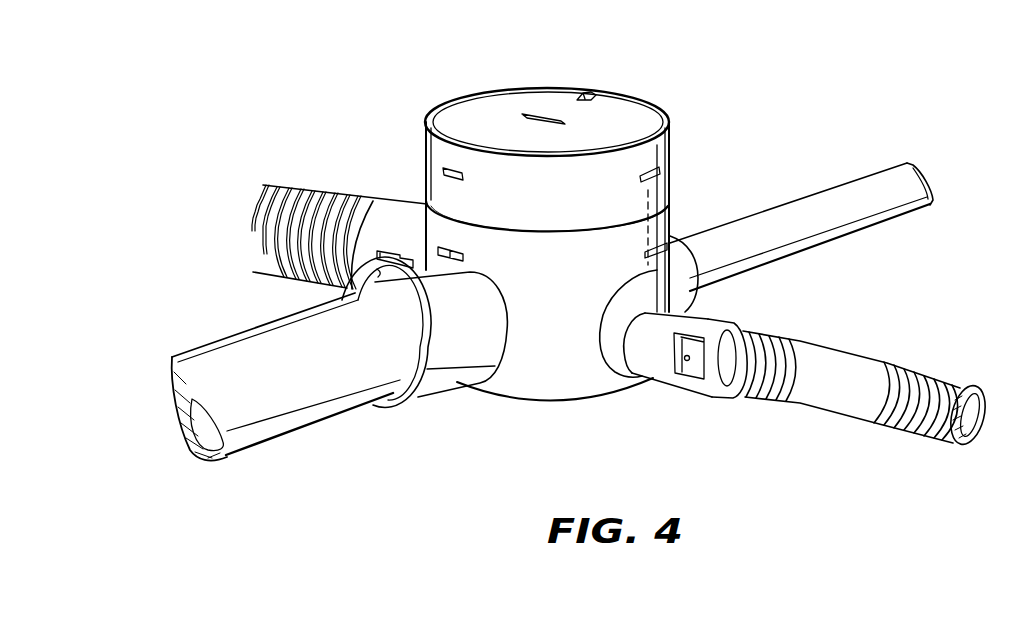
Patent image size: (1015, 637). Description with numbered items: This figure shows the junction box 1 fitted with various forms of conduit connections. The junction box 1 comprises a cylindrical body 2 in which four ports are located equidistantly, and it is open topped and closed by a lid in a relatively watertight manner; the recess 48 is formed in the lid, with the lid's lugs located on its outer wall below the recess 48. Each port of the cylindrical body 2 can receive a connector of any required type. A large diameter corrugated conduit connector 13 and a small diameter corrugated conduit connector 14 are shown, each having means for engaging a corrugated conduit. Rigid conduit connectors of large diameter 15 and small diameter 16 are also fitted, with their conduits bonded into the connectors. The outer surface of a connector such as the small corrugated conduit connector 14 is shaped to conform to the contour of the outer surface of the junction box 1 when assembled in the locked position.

The junction box 1 is at (733, 104).
The cylindrical body 2 is at (560, 374).
The large diameter corrugated conduit connector 13 is at (393, 228).
The small diameter corrugated conduit connector 14 is at (703, 316).
The large diameter rigid conduit connector 15 is at (440, 374).
The small diameter rigid conduit connector 16 is at (677, 265).
The recess 48 is at (589, 97).